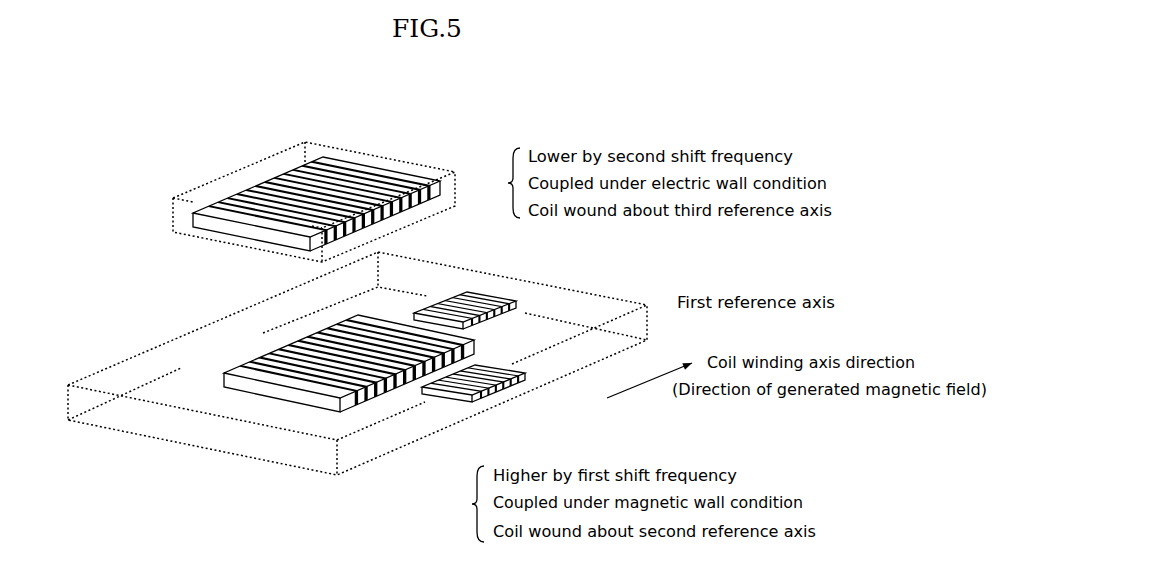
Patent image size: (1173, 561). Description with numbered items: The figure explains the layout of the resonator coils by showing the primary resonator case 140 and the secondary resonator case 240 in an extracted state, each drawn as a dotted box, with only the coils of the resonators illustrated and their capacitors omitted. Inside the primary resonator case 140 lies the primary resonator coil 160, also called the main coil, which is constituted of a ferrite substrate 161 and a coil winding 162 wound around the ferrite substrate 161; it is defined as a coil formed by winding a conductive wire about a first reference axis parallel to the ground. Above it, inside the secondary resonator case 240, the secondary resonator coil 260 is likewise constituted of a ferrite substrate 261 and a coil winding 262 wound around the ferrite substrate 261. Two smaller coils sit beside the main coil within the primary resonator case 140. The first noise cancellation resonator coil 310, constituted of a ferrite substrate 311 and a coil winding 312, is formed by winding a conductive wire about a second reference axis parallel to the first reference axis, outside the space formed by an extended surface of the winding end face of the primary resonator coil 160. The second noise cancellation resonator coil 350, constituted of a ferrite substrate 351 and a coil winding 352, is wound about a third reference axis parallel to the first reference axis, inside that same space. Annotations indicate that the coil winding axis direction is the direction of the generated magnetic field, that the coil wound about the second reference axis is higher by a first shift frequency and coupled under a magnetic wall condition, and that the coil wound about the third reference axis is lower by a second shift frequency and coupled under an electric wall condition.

The primary resonator case 140 is at (227, 452).
The primary resonator coil 160 is at (328, 396).
The ferrite substrate 161 is at (313, 398).
The coil winding 162 is at (360, 402).
The secondary resonator case 240 is at (385, 157).
The secondary resonator coil 260 is at (311, 190).
The ferrite substrate 261 is at (228, 227).
The coil winding 262 is at (248, 188).
The first noise cancellation resonator coil 310 is at (509, 414).
The ferrite substrate 311 is at (458, 397).
The coil winding 312 is at (522, 382).
The second noise cancellation resonator coil 350 is at (501, 280).
The ferrite substrate 351 is at (517, 300).
The coil winding 352 is at (477, 292).